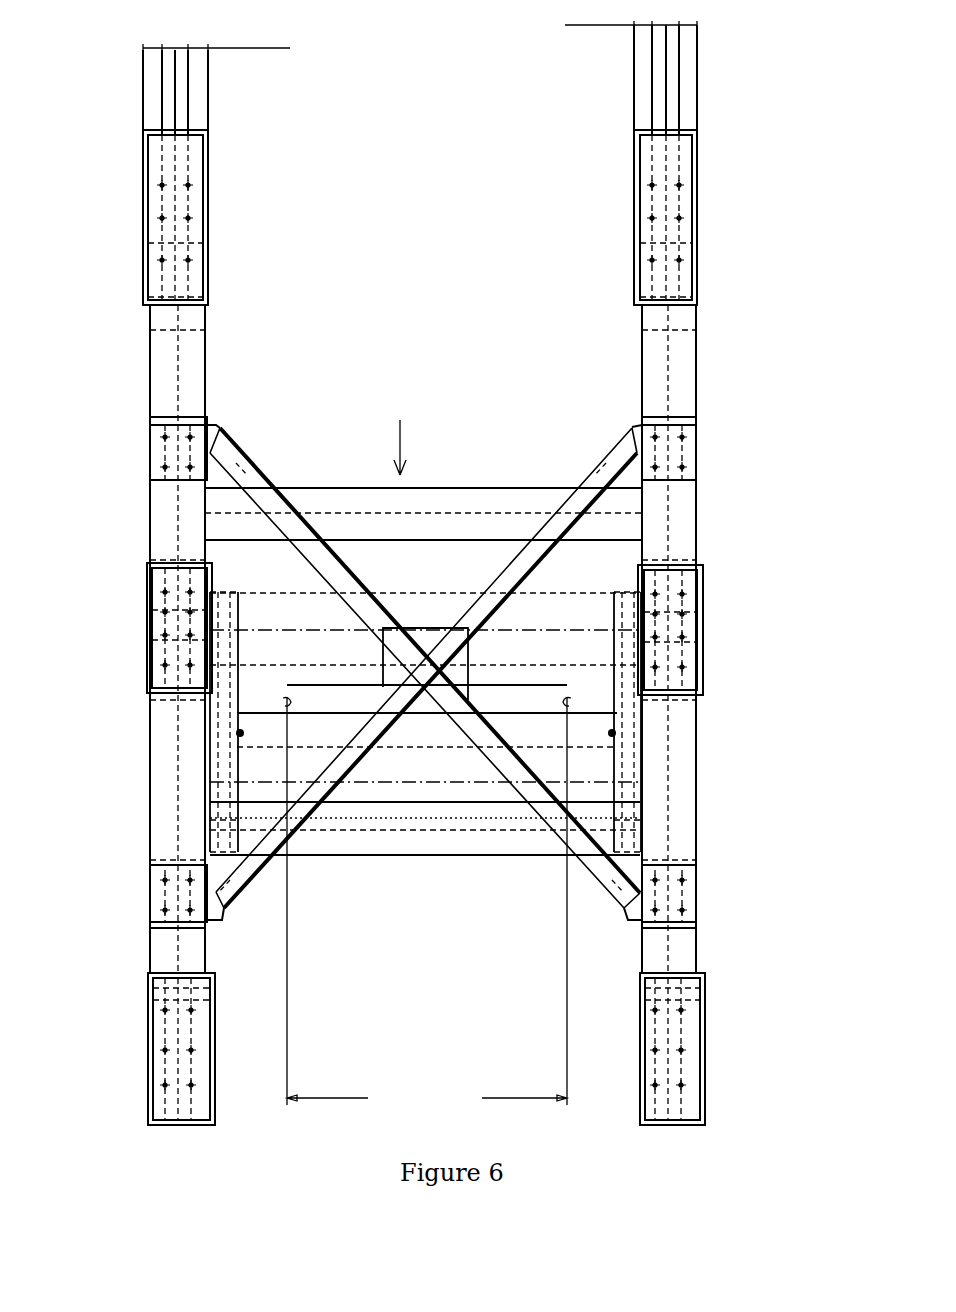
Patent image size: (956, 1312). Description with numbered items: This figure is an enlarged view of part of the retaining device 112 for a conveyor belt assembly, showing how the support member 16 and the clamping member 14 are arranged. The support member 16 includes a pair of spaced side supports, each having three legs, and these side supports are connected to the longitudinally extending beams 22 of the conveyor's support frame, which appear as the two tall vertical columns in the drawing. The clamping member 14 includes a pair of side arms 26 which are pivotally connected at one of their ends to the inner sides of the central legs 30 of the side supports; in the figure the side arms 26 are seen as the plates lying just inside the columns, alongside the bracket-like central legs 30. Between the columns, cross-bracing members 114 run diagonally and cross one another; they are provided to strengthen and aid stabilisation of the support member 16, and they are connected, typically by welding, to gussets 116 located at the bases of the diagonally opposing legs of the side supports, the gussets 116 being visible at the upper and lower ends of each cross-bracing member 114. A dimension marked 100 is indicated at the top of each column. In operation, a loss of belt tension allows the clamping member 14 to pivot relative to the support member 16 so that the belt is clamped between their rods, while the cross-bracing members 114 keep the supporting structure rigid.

The clamping member 14 is at (688, 755).
The support member 16 is at (716, 498).
The longitudinally extending beam 22 is at (150, 370).
The side arm 26 is at (210, 730).
The central leg 30 is at (148, 632).
The dimension 100 is at (420, 31).
The retaining device 112 is at (410, 420).
The cross-bracing member 114 is at (283, 866).
The gusset 116 is at (213, 432).